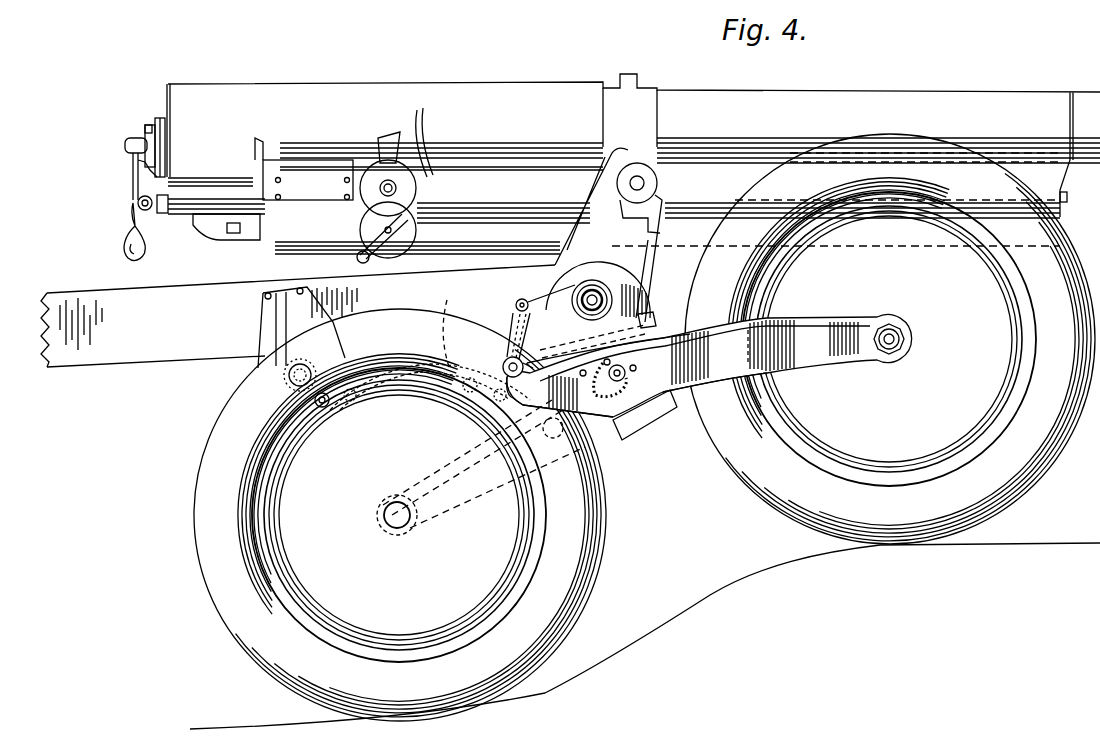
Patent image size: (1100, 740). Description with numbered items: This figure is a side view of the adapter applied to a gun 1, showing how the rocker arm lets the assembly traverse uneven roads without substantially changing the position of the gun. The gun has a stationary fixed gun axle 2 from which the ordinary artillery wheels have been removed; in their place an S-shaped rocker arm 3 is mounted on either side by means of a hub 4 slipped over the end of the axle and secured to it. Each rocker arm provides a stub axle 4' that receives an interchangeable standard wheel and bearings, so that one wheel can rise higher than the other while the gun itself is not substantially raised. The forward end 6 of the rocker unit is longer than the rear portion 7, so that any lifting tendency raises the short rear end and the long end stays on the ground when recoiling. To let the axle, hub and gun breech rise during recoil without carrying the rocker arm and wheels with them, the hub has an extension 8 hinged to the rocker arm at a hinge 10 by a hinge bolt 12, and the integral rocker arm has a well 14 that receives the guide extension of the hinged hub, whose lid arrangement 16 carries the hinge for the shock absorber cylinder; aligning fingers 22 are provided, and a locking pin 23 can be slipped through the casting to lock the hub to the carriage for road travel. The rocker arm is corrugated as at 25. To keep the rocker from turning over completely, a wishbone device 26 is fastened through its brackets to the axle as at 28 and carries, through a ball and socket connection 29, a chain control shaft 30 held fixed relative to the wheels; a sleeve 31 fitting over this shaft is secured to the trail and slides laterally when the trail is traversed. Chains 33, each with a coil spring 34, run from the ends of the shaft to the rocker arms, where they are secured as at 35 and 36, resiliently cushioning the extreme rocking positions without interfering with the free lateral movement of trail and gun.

The gun 1 is at (527, 97).
The gun axle 2 is at (585, 297).
The S-shaped rocker arm 3 is at (811, 373).
The hub 4 is at (616, 236).
The stub axle 4' is at (640, 445).
The forward end 6 is at (823, 318).
The rear portion 7 is at (473, 494).
The extension 8 is at (511, 352).
The hinge 10 is at (473, 457).
The hinge bolt 12 is at (505, 365).
The well 14 is at (643, 425).
The lid arrangement 16 is at (688, 335).
The aligning finger 22 is at (648, 318).
The locking pin 23 is at (627, 372).
The corrugation 25 is at (748, 354).
The wishbone device 26 is at (447, 326).
The fastening of bracket to axle 28 is at (596, 283).
The ball and socket connection 29 is at (318, 410).
The chain control shaft 30 is at (290, 388).
The sleeve 31 is at (272, 330).
The chain 33 is at (422, 403).
The coil spring 34 is at (370, 403).
The chain attachment to rocker arm 35 is at (555, 438).
The chain attachment to rocker arm 36 is at (522, 300).